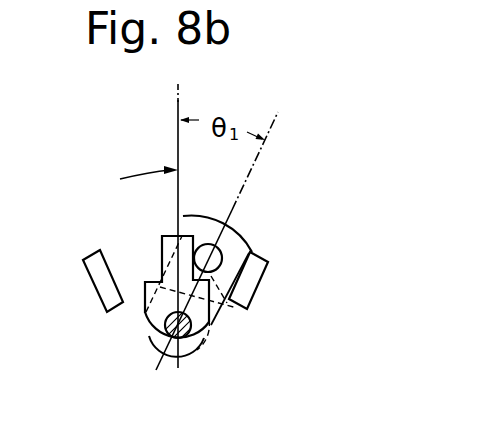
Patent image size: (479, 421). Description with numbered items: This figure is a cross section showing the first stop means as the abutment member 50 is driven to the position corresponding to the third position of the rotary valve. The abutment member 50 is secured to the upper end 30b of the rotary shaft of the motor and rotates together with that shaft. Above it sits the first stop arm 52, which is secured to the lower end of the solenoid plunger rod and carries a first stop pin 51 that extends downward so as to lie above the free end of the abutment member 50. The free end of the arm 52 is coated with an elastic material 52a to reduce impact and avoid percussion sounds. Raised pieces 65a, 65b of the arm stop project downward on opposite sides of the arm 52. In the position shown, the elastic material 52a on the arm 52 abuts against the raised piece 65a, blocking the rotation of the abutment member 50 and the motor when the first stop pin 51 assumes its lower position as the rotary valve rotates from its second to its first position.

The first stop arm 52 is at (181, 366).
The elastic material 52a is at (222, 232).
The abutment member 50 is at (203, 325).
The first stop pin 51 is at (222, 306).
The raised piece 65a is at (262, 272).
The raised piece 65b is at (84, 268).
The upper end of the rotary shaft 30b is at (165, 329).